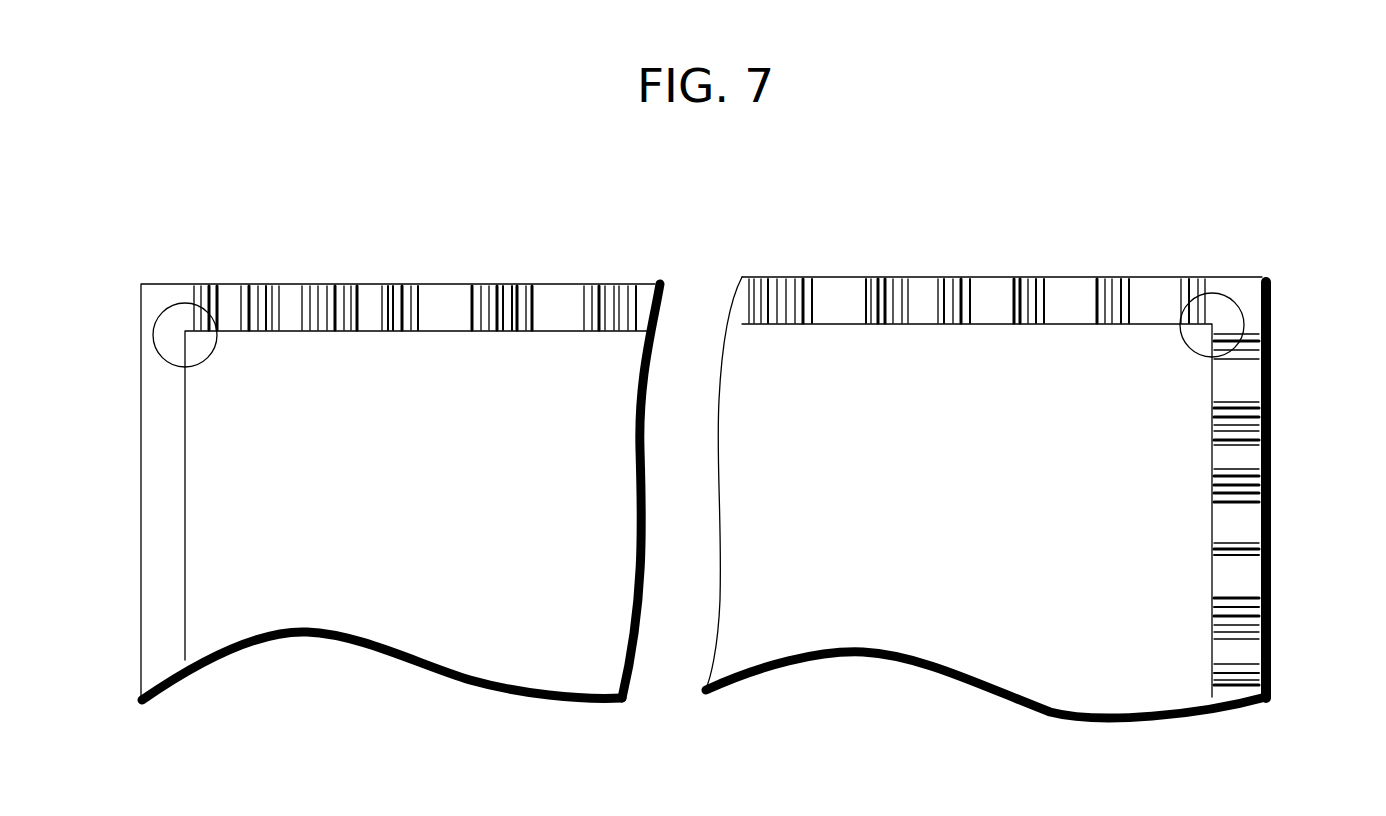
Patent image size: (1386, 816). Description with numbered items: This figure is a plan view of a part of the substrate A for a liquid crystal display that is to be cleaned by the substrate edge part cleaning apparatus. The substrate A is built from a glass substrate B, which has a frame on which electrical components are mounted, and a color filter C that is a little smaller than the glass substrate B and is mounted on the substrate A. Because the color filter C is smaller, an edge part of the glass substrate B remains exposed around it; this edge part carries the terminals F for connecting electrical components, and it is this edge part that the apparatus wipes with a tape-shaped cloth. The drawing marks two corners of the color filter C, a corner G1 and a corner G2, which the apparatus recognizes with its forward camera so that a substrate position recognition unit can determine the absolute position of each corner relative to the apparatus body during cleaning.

The substrate A is at (1094, 212).
The glass substrate B is at (160, 562).
The color filter C is at (207, 476).
The terminals F is at (1238, 456).
The corner G1 is at (1240, 312).
The corner G2 is at (180, 305).